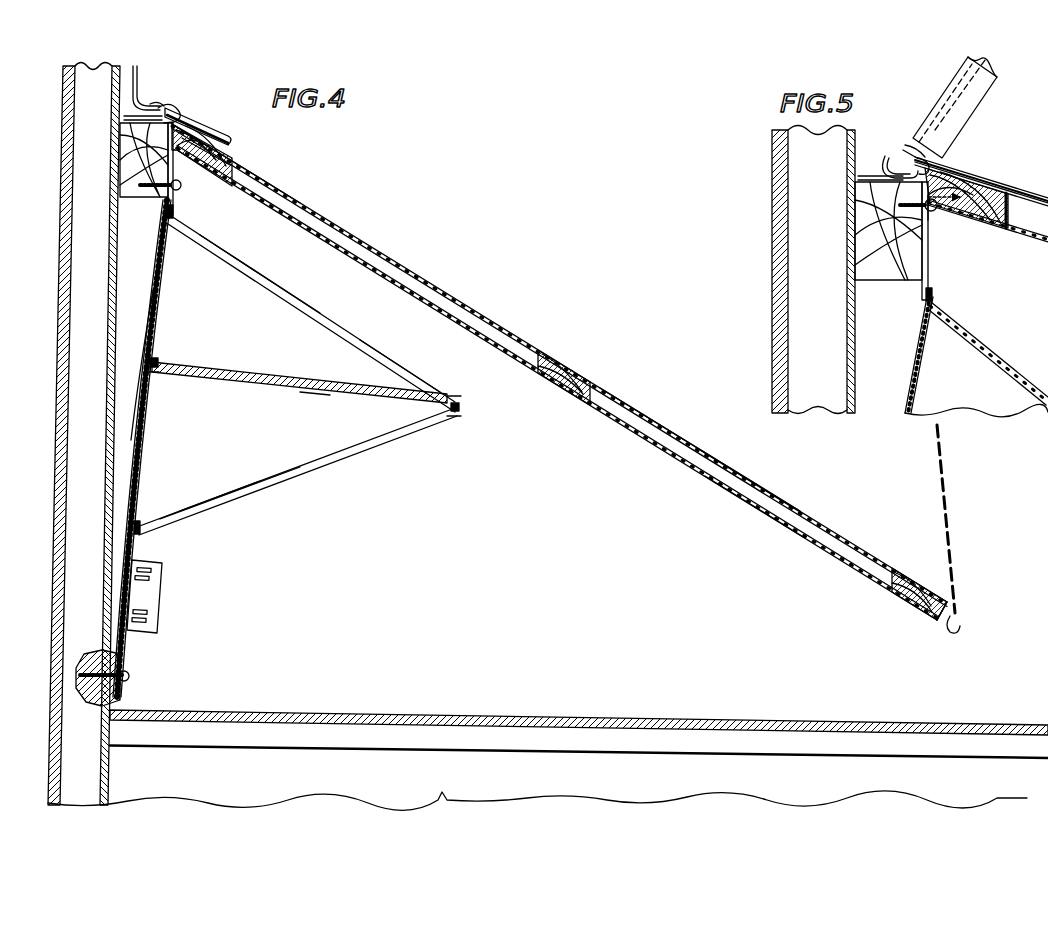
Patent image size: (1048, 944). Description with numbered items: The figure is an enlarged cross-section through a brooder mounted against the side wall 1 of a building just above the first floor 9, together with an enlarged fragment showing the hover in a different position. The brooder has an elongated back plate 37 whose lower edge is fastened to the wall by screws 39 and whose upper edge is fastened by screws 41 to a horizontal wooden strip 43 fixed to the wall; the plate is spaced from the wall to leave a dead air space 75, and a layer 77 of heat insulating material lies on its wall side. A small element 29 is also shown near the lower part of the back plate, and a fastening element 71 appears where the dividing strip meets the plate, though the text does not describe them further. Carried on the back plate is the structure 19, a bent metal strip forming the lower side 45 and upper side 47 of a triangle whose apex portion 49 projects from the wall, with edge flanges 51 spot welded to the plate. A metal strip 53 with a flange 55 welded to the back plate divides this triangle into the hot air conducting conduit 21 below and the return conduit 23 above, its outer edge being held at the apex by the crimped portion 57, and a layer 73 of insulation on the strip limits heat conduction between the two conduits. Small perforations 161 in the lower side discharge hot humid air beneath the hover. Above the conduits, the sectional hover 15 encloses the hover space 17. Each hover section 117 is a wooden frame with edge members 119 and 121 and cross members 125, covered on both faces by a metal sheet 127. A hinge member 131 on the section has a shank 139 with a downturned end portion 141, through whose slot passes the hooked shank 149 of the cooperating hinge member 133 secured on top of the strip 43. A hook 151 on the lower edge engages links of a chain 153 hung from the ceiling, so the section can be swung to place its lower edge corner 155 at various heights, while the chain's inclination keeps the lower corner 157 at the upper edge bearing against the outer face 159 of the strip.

In FIG. 4, the side wall 1 is at (60, 136).
In FIG. 5, the side wall 1 is at (774, 218).
In FIG. 4, the first floor 9 is at (480, 715).
In FIG. 4, the sectional hover 15 is at (519, 333).
In FIG. 4, the hover space 17 is at (567, 492).
In FIG. 4, the structure 19 is at (335, 329).
In FIG. 4, the hot air conducting conduit 21 is at (242, 460).
In FIG. 4, the return conduit 23 is at (247, 304).
In FIG. 4, the bracket box 29 is at (164, 600).
In FIG. 4, the back plate 37 is at (148, 472).
In FIG. 4, the screws 39 is at (128, 678).
In FIG. 4, the screws 41 is at (176, 188).
In FIG. 5, the screws 41 is at (918, 241).
In FIG. 4, the wooden strip 43 is at (140, 162).
In FIG. 5, the wooden strip 43 is at (872, 268).
In FIG. 4, the lower side 45 is at (361, 440).
In FIG. 4, the upper side 47 is at (381, 360).
In FIG. 4, the apex portion 49 is at (461, 407).
In FIG. 4, the flanges 51 is at (174, 212).
In FIG. 4, the metal strip 53 is at (302, 392).
In FIG. 4, the flange 55 is at (160, 366).
In FIG. 4, the crimped portion 57 is at (462, 403).
In FIG. 4, the fastener 71 is at (159, 360).
In FIG. 4, the layer of heat insulating material 73 is at (301, 389).
In FIG. 4, the dead air space 75 is at (142, 282).
In FIG. 4, the layer of heat insulating material 77 is at (134, 412).
In FIG. 4, the hover section 117 is at (652, 405).
In FIG. 5, the hover section 117 is at (985, 114).
In FIG. 4, the edge member 119 is at (232, 151).
In FIG. 4, the edge member 121 is at (906, 588).
In FIG. 4, the cross members 125 is at (579, 378).
In FIG. 4, the metal sheet 127 is at (742, 471).
In FIG. 4, the hinge member 131 is at (212, 129).
In FIG. 5, the hinge member 131 is at (962, 172).
In FIG. 4, the hinge member 133 is at (128, 115).
In FIG. 5, the hinge member 133 is at (860, 176).
In FIG. 4, the shank 139 is at (179, 124).
In FIG. 4, the downturned end portion 141 is at (166, 106).
In FIG. 5, the downturned end portion 141 is at (954, 155).
In FIG. 4, the shank 149 is at (133, 70).
In FIG. 5, the shank 149 is at (887, 157).
In FIG. 4, the hook 151 is at (963, 631).
In FIG. 4, the chain 153 is at (949, 487).
In FIG. 4, the lower edge corner 155 is at (941, 628).
In FIG. 4, the lower corner 157 is at (178, 140).
In FIG. 5, the lower corner 157 is at (968, 227).
In FIG. 4, the outer face 159 is at (178, 168).
In FIG. 5, the outer face 159 is at (930, 225).
In FIG. 4, the perforations 161 is at (219, 501).